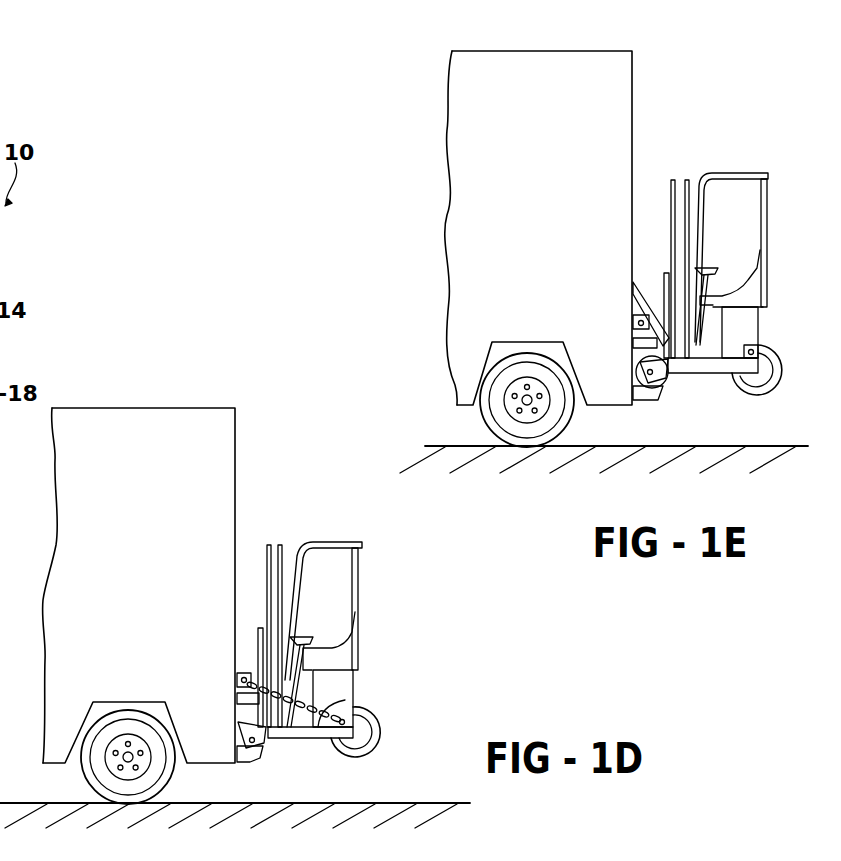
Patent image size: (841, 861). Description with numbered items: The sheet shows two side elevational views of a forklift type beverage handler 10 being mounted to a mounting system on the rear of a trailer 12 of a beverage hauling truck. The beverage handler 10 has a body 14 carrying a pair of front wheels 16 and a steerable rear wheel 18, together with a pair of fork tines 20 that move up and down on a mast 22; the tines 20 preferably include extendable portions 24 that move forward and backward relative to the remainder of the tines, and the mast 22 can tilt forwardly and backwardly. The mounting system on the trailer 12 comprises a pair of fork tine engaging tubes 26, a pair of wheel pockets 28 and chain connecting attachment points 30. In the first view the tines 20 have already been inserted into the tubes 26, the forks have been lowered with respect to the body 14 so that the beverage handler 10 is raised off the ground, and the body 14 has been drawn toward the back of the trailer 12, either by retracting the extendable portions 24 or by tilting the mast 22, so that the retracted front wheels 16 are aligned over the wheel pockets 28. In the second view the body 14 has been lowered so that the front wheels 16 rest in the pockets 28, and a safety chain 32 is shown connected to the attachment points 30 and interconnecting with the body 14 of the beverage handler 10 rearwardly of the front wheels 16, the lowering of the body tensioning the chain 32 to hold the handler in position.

In FIG. 1E, the beverage handler 10 is at (793, 178).
In FIG. 1D, the beverage handler 10 is at (380, 577).
In FIG. 1E, the trailer 12 is at (650, 77).
In FIG. 1D, the trailer 12 is at (282, 457).
In FIG. 1E, the body 14 is at (752, 315).
In FIG. 1D, the body 14 is at (347, 692).
In FIG. 1E, the front wheels 16 is at (666, 378).
In FIG. 1D, the front wheels 16 is at (270, 741).
In FIG. 1E, the steerable rear wheel 18 is at (764, 380).
In FIG. 1D, the steerable rear wheel 18 is at (370, 742).
In FIG. 1E, the fork tines 20 is at (667, 280).
In FIG. 1D, the fork tines 20 is at (250, 720).
In FIG. 1E, the mast 22 is at (680, 180).
In FIG. 1D, the mast 22 is at (288, 543).
In FIG. 1E, the extendable portions 24 is at (643, 297).
In FIG. 1E, the fork tine engaging tubes 26 is at (636, 344).
In FIG. 1D, the fork tine engaging tubes 26 is at (240, 702).
In FIG. 1E, the wheel pockets 28 is at (650, 407).
In FIG. 1D, the wheel pockets 28 is at (252, 762).
In FIG. 1E, the chain connecting attachment points 30 is at (633, 300).
In FIG. 1D, the chain connecting attachment points 30 is at (243, 675).
In FIG. 1D, the safety chains 32 is at (302, 707).